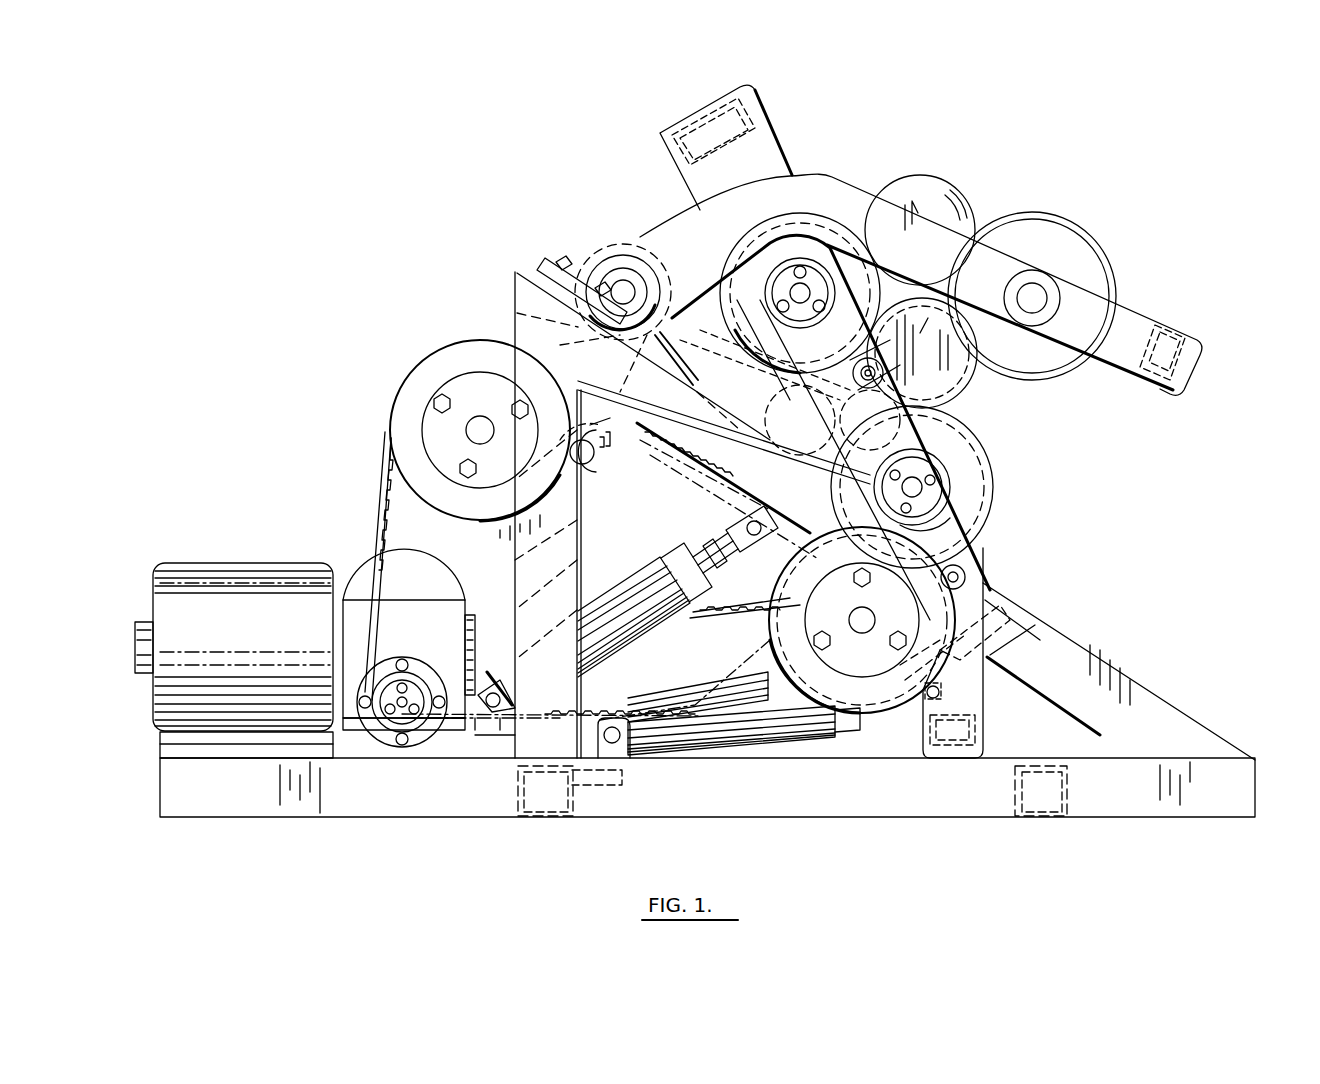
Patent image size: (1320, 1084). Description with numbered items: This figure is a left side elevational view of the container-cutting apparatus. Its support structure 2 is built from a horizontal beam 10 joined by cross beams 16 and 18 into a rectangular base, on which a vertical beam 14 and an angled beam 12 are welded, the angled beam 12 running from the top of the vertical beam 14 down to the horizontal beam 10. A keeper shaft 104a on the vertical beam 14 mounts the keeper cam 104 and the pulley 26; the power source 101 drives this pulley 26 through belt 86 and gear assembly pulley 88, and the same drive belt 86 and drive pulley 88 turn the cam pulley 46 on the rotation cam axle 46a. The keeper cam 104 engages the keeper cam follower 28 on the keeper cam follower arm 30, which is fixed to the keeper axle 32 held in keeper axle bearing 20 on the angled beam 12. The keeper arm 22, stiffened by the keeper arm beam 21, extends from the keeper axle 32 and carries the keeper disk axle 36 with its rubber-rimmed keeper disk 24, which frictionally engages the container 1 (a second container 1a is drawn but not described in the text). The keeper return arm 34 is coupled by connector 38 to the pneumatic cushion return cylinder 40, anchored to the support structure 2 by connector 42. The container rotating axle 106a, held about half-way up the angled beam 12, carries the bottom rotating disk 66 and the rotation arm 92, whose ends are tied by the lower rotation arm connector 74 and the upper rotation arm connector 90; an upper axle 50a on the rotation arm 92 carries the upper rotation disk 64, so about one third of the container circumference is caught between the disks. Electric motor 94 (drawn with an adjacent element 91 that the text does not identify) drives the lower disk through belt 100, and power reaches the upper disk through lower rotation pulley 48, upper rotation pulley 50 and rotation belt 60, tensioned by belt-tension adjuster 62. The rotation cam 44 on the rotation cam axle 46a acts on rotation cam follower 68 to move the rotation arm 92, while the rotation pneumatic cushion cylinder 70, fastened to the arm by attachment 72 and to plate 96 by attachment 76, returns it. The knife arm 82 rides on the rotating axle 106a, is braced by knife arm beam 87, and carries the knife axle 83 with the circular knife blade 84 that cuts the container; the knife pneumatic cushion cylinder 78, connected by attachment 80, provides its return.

The container 1 is at (960, 390).
The crushing roll 1a is at (925, 178).
The support structure 2 is at (1247, 710).
The horizontal beam 10 is at (1252, 806).
The angled beam 12 is at (1145, 710).
The vertical beam 14 is at (552, 579).
The cross beam 16 is at (572, 805).
The cross beam 18 is at (1040, 818).
The keeper axle bearing 20 is at (540, 265).
The keeper arm beam 21 is at (1178, 377).
The keeper arm 22 is at (1120, 320).
The keeper disk 24 is at (1068, 238).
The pulley 26 is at (462, 424).
The keeper cam follower 28 is at (597, 470).
The keeper cam follower arm 30 is at (534, 315).
The keeper axle 32 is at (614, 285).
The keeper return arm 34 is at (698, 396).
The keeper disk axle 36 is at (1025, 293).
The connector 38 is at (735, 545).
The pneumatic cushion return cylinder 40 is at (600, 606).
The connector 42 is at (500, 705).
The rotation cam 44 is at (832, 540).
The cam pulley 46 is at (860, 625).
The rotation cam axle 46a is at (780, 610).
The lower rotation pulley 48 is at (915, 534).
The upper rotation pulley 50 is at (800, 290).
The upper axle 50a is at (797, 285).
The rotation belt 60 is at (845, 415).
The belt-tension adjuster 62 is at (856, 368).
The upper rotation disk 64 is at (880, 285).
The bottom rotating disk 66 is at (990, 515).
The rotation cam follower 68 is at (965, 575).
The rotation pneumatic cushion cylinder 70 is at (735, 740).
The rotation pneumatic cushion cylinder attachment 72 is at (925, 700).
The lower rotation arm connector 74 is at (983, 738).
The attachment 76 is at (600, 735).
The knife pneumatic cushion cylinder 78 is at (760, 672).
The attachment 80 is at (965, 680).
The knife arm 82 is at (805, 435).
The knife axle 83 is at (780, 415).
The circular knife blade 84 is at (780, 425).
The belt 86 is at (388, 495).
The knife arm beam 87 is at (1020, 650).
The gear assembly pulley 88 is at (405, 725).
The upper rotation arm connector 90 is at (698, 118).
The gear box 91 is at (415, 605).
The rotation arm 92 is at (760, 153).
The electric motor 94 is at (395, 575).
The plate 96 is at (642, 786).
The belt 100 is at (725, 618).
The power source 101 is at (275, 595).
The keeper cam 104 is at (598, 443).
The keeper shaft 104a is at (478, 425).
The container rotating axle 106a is at (915, 487).